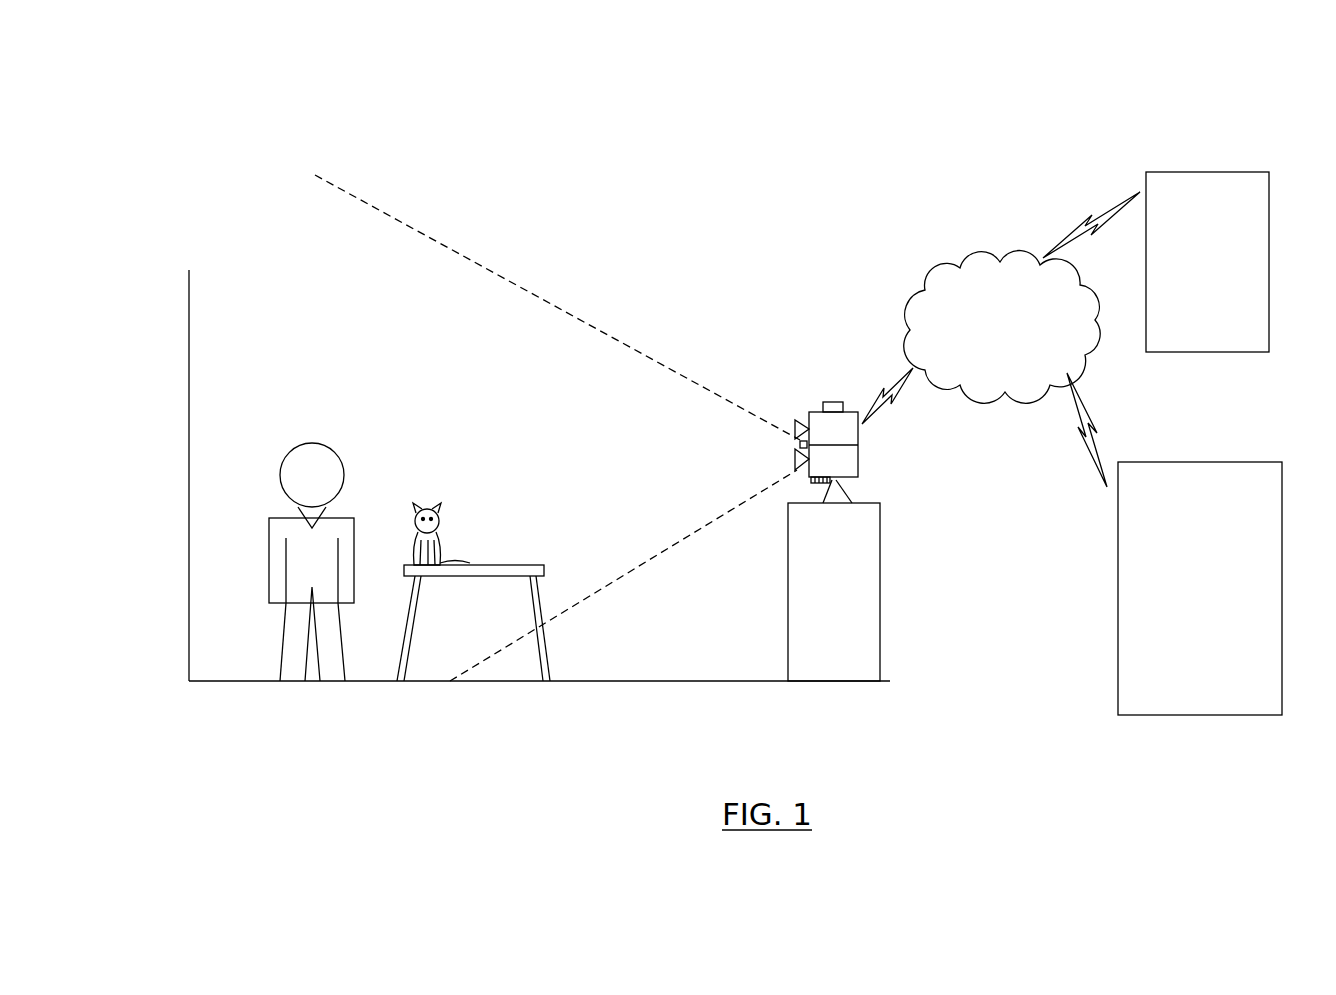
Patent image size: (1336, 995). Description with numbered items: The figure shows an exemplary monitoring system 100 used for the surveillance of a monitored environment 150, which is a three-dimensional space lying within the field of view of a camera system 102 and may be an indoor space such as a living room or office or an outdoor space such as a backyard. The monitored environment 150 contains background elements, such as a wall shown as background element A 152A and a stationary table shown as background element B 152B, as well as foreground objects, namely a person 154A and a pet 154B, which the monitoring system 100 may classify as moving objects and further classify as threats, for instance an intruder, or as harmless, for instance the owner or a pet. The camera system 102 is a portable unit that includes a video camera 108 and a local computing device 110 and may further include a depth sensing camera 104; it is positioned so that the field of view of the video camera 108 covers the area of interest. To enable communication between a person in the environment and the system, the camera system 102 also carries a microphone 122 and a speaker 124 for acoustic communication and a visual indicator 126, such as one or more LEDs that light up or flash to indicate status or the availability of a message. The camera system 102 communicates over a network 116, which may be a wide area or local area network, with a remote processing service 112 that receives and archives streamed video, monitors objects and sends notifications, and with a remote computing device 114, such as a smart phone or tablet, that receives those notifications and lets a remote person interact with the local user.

The monitoring system 100 is at (840, 210).
The camera system 102 is at (746, 415).
The depth sensing camera 104 is at (808, 432).
The video camera 108 is at (863, 478).
The local computing device 110 is at (860, 463).
The remote processing service 112 is at (1183, 641).
The remote computing device 114 is at (1190, 319).
The network 116 is at (985, 359).
The microphone 122 is at (808, 480).
The speaker 124 is at (815, 485).
The visual indicator 126 is at (800, 444).
The monitored environment 150 is at (539, 435).
The background element A 152A is at (189, 401).
The background element B 152B is at (539, 638).
The foreground object (person) 154A is at (337, 452).
The foreground object (pet) 154B is at (445, 520).